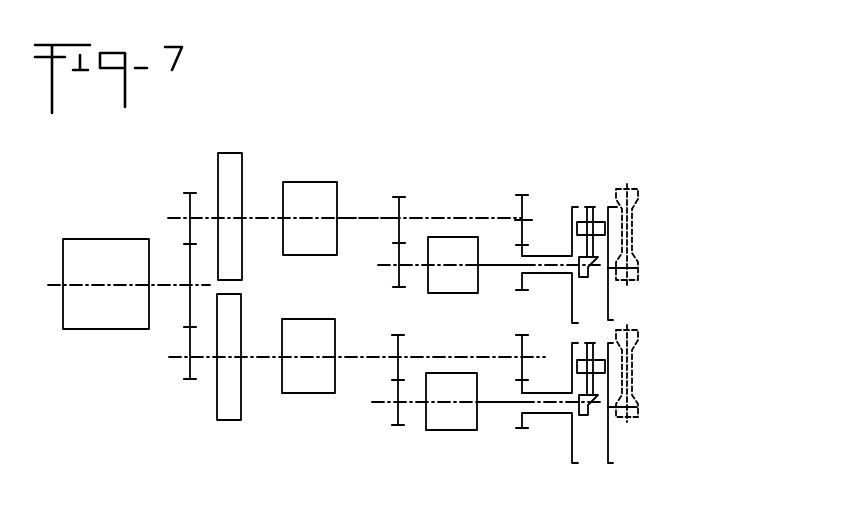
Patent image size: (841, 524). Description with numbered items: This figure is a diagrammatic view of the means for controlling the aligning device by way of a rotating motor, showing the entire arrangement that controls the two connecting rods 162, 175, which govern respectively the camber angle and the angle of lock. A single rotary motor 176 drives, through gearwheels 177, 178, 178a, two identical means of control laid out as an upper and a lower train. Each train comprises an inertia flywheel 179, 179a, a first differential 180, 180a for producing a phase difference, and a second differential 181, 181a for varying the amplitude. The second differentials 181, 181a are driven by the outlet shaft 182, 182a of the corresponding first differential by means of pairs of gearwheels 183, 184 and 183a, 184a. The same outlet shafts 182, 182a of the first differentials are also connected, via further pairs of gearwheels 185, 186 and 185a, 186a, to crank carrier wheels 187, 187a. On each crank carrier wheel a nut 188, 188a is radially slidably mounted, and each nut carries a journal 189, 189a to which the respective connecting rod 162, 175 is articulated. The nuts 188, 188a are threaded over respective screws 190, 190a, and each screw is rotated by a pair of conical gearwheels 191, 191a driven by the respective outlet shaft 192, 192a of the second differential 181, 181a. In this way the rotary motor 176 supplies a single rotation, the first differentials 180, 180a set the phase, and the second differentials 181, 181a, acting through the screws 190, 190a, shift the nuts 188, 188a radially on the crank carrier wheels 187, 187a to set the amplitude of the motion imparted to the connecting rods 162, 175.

The connecting rod 162 is at (628, 213).
The connecting rod 175 is at (627, 372).
The rotary motor 176 is at (78, 245).
The gearwheel 177 is at (188, 262).
The gearwheel 178 is at (188, 207).
The gearwheel 178a is at (185, 370).
The inertia flywheel 179 is at (236, 157).
The inertia flywheel 179a is at (227, 413).
The first differential 180 is at (317, 190).
The first differential 180a is at (312, 317).
The second differential 181 is at (447, 245).
The second differential 181a is at (450, 425).
The outlet shaft 182 is at (367, 218).
The outlet shaft 182a is at (358, 355).
The gearwheel 183 is at (403, 207).
The gearwheel 183a is at (402, 345).
The gearwheel 184 is at (402, 278).
The gearwheel 184a is at (395, 423).
The gearwheel 185 is at (525, 195).
The gearwheel 185a is at (524, 345).
The gearwheel 186 is at (527, 250).
The gearwheel 186a is at (532, 425).
The crank carrier wheel 187 is at (613, 300).
The crank carrier wheel 187a is at (610, 440).
The nut 188 is at (608, 236).
The nut 188a is at (608, 367).
The journal 189 is at (637, 266).
The journal 189a is at (633, 403).
The screw 190 is at (593, 207).
The screw 190a is at (593, 343).
The conical gearwheel 191 is at (590, 272).
The conical gearwheel 191a is at (585, 412).
The outlet shaft 192 is at (493, 263).
The outlet shaft 192a is at (495, 402).